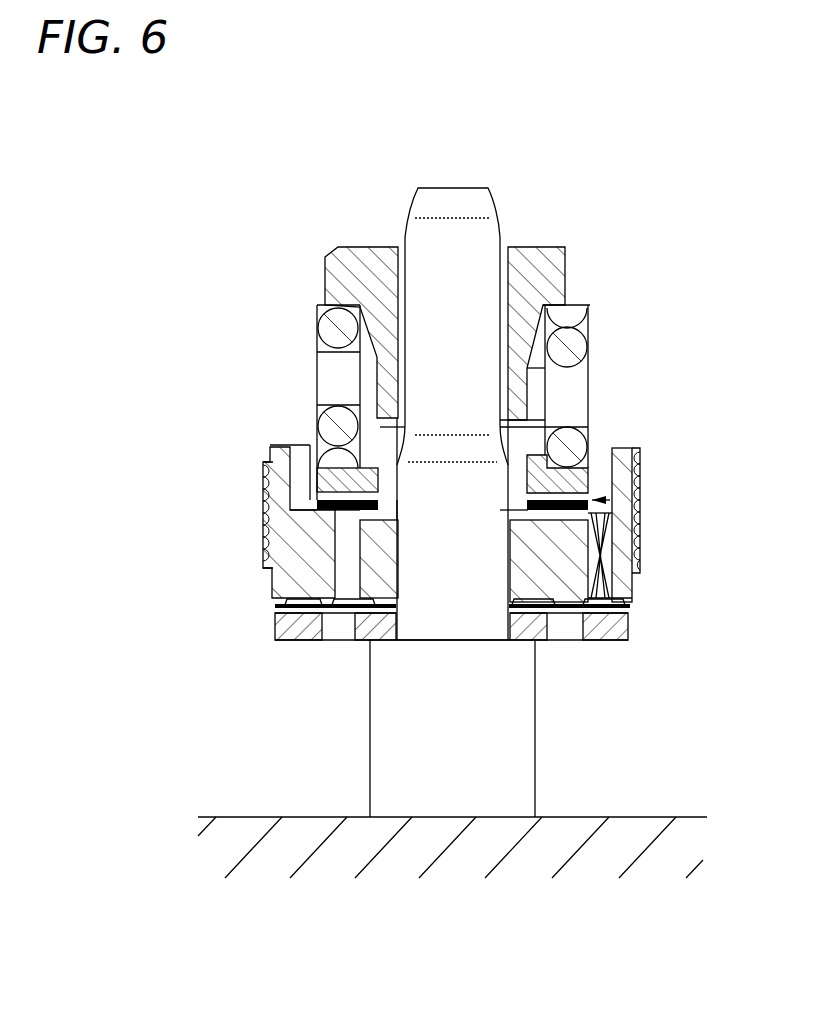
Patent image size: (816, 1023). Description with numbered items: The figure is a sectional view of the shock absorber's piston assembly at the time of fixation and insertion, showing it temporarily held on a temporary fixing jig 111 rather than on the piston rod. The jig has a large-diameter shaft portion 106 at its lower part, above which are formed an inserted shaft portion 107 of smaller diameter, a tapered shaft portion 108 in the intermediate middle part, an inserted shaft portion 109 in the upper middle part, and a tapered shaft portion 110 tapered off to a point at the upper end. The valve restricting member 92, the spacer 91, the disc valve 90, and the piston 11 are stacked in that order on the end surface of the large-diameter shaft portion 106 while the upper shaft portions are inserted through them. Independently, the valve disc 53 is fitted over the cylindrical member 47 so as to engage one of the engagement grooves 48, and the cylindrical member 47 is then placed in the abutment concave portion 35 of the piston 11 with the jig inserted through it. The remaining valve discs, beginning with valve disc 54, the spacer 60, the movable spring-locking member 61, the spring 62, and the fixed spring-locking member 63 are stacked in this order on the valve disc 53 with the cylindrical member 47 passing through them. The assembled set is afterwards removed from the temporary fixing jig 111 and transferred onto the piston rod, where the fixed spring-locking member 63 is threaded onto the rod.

The piston 11 is at (644, 573).
The abutment concave portion 35 is at (397, 513).
The cylindrical member 47 is at (547, 428).
The engagement grooves 48 is at (337, 513).
The valve disc 53 is at (603, 550).
The valve disc 54 is at (600, 503).
The spacer 60 is at (592, 482).
The movable spring-locking member 61 is at (578, 474).
The spring 62 is at (573, 348).
The fixed spring-locking member 63 is at (552, 272).
The disc valve 90 is at (628, 609).
The spacer 91 is at (534, 642).
The valve restricting member 92 is at (630, 629).
The large-diameter shaft portion 106 is at (395, 750).
The inserted shaft portion 107 is at (425, 620).
The tapered shaft portion 108 is at (357, 432).
The inserted shaft portion 109 is at (415, 233).
The tapered shaft portion 110 is at (493, 201).
The temporary fixing jig 111 is at (663, 817).